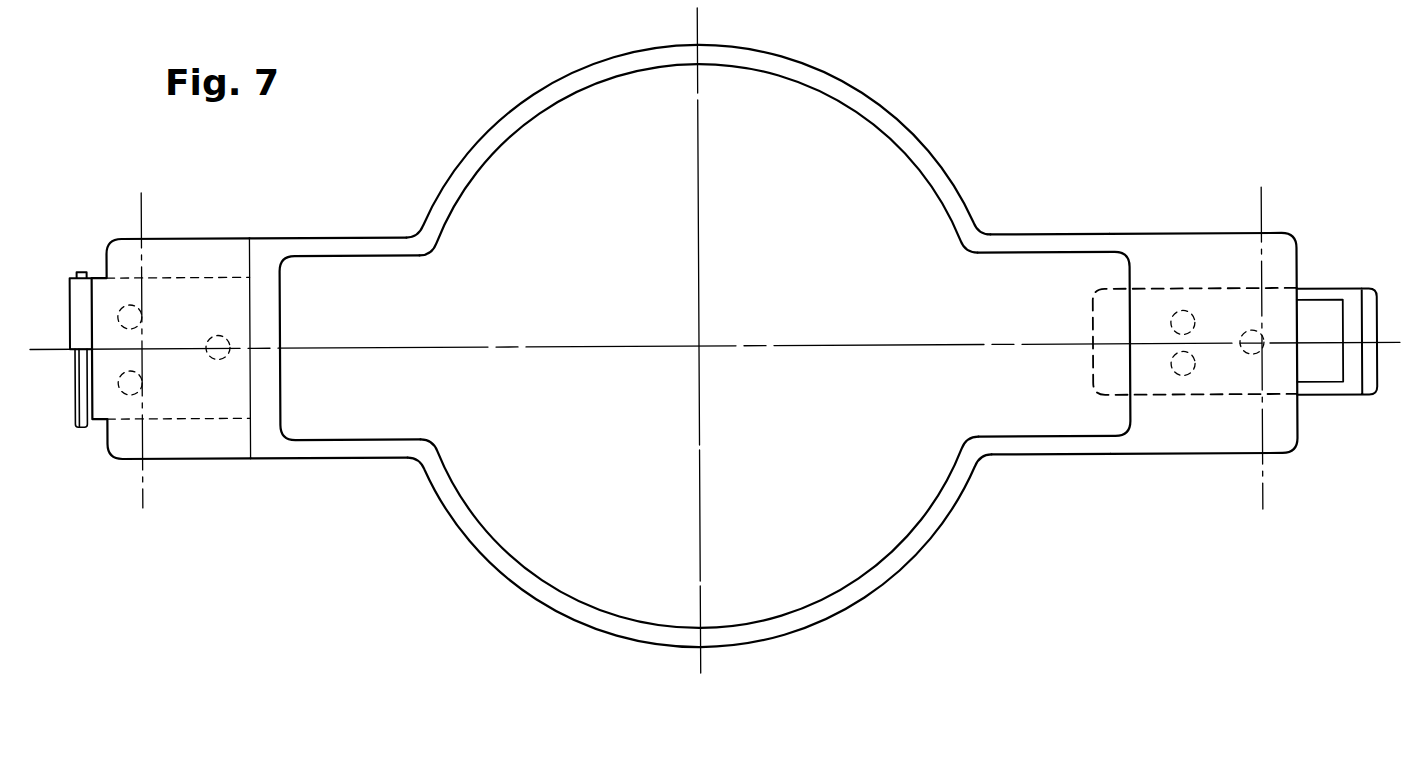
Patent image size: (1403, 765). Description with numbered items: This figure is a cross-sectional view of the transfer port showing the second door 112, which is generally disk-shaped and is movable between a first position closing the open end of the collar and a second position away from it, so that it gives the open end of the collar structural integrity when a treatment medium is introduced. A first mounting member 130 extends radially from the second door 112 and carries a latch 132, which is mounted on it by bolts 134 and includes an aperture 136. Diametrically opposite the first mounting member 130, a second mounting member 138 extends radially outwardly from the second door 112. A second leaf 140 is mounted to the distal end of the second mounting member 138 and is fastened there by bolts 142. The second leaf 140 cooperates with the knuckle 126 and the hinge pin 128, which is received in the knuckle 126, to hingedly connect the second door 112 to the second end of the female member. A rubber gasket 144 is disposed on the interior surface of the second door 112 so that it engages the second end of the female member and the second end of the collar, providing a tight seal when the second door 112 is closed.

The second door 112 is at (857, 99).
The knuckle 126 is at (85, 297).
The hinge pin 128 is at (83, 425).
The first mounting member 130 is at (1285, 245).
The latch 132 is at (1325, 300).
The bolts 134 is at (1252, 336).
The aperture 136 is at (1317, 375).
The second mounting member 138 is at (195, 257).
The second leaf 140 is at (230, 312).
The bolts 142 is at (138, 380).
The rubber gasket 144 is at (813, 447).